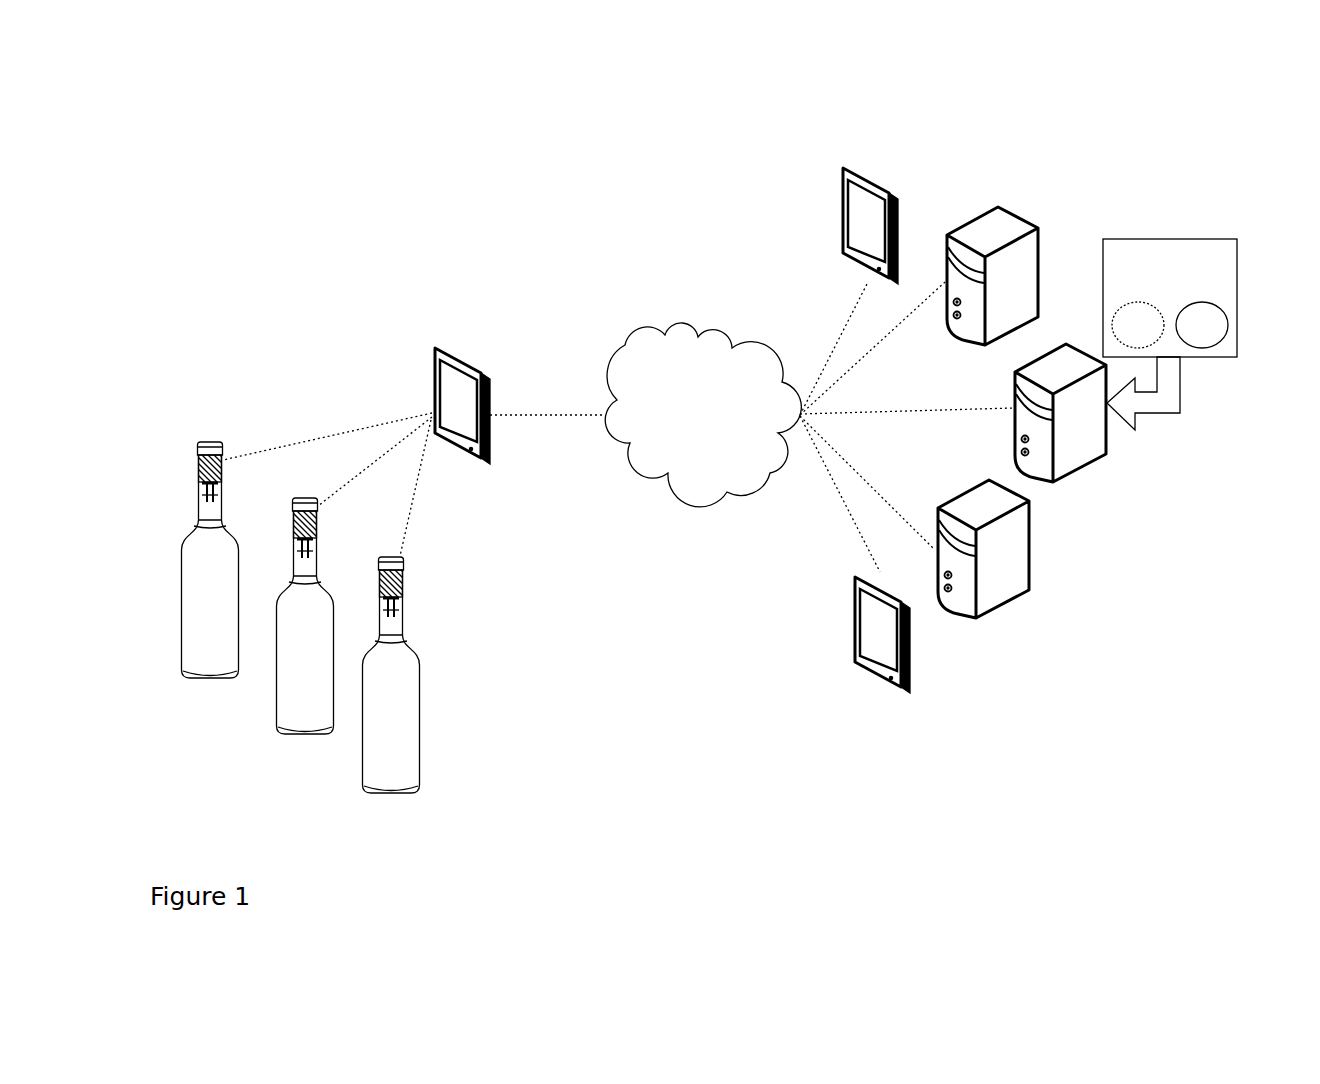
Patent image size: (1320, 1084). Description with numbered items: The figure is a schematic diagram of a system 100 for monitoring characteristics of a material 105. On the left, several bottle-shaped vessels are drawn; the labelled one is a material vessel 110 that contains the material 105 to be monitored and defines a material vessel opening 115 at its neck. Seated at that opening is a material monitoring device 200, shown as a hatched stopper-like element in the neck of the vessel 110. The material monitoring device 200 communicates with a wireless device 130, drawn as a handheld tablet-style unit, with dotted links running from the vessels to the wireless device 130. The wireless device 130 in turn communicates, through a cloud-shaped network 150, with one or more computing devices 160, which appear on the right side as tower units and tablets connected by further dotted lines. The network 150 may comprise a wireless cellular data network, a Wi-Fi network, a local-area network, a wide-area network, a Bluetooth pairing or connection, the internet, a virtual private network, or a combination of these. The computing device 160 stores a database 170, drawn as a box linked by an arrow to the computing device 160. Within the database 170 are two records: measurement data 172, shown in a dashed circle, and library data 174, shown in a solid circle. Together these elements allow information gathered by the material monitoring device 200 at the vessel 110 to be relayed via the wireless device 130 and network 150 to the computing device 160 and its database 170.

The system 100 is at (366, 166).
The material 105 is at (462, 828).
The material vessel 110 is at (472, 694).
The material vessel opening 115 is at (489, 561).
The wireless device 130 is at (433, 368).
The network 150 is at (679, 440).
The computing device 160 is at (1060, 478).
The database 170 is at (1152, 291).
The measurement data 172 is at (1138, 325).
The library data 174 is at (1202, 325).
The material monitoring device 200 is at (476, 644).